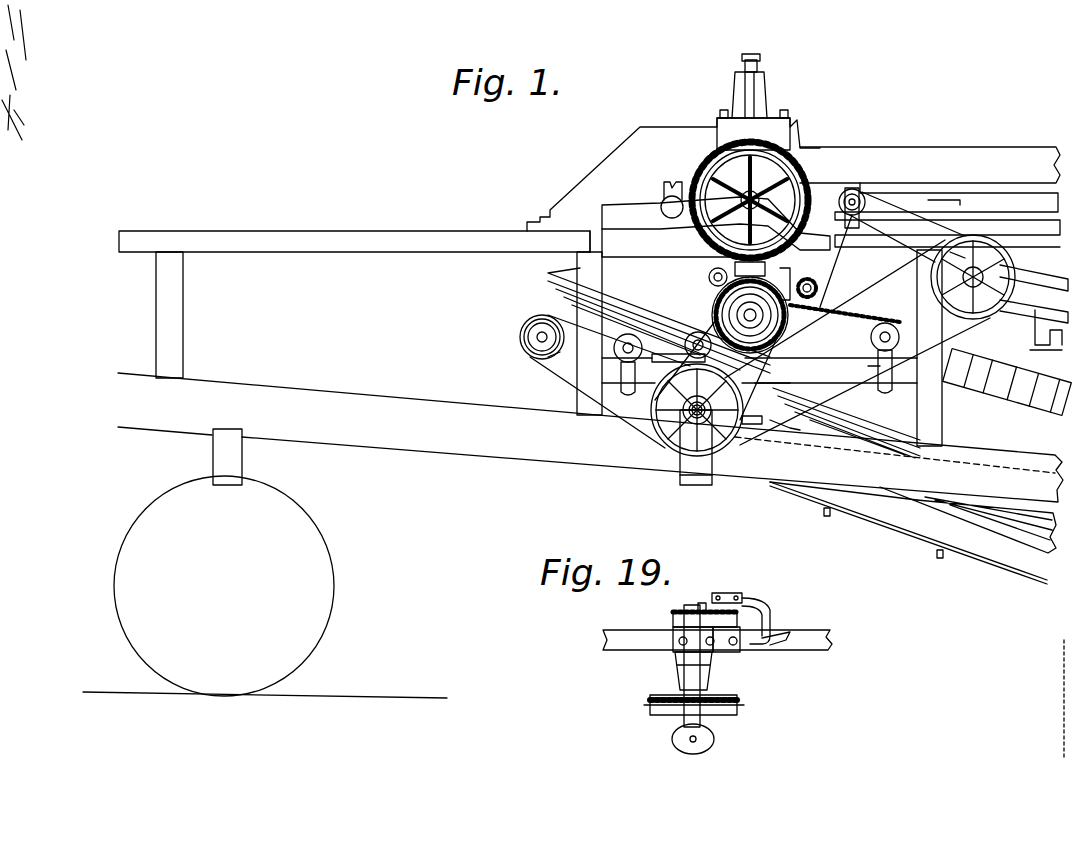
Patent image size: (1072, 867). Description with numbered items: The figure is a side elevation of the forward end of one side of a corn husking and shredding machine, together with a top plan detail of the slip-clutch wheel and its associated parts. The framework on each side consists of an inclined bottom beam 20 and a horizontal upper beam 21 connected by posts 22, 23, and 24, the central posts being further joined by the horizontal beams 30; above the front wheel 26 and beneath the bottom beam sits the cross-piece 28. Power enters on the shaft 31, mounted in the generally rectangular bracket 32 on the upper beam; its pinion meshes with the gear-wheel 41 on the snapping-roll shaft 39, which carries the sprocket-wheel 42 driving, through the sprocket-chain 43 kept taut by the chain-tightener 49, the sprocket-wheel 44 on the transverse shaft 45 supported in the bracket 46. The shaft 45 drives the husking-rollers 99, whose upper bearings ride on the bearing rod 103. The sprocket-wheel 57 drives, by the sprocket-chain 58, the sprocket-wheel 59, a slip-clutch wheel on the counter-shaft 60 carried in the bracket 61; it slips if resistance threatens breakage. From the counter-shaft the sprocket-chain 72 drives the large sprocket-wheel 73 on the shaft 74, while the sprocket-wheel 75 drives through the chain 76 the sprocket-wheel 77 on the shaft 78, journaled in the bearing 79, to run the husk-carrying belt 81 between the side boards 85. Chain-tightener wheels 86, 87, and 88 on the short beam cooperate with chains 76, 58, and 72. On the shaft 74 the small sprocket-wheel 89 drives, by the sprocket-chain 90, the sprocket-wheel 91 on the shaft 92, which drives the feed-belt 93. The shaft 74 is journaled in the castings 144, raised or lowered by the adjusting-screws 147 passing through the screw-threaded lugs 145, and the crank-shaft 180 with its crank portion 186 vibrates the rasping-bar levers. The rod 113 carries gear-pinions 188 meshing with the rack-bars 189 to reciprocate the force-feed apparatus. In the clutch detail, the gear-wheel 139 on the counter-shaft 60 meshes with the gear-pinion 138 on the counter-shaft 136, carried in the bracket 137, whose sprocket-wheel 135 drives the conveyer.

In FIG. 1, the inclined bottom beam 20 is at (590, 437).
In FIG. 19, the inclined bottom beam 20 is at (620, 644).
In FIG. 1, the horizontal upper beam 21 is at (354, 243).
In FIG. 1, the post 22 is at (170, 321).
In FIG. 1, the central post 23 is at (597, 283).
In FIG. 1, the central post 24 is at (933, 422).
In FIG. 1, the front wheel 26 is at (320, 538).
In FIG. 1, the cross-piece 28 is at (230, 460).
In FIG. 1, the horizontal beam 30 is at (759, 372).
In FIG. 1, the shaft 31 is at (672, 207).
In FIG. 1, the bracket 32 is at (710, 219).
In FIG. 1, the shaft 39 is at (762, 207).
In FIG. 1, the gear-wheel 41 is at (730, 142).
In FIG. 1, the sprocket-wheel 42 is at (775, 188).
In FIG. 1, the sprocket-chain 43 is at (751, 266).
In FIG. 1, the sprocket-wheel 44 is at (738, 310).
In FIG. 1, the transverse shaft 45 is at (722, 315).
In FIG. 1, the bracket 46 is at (840, 292).
In FIG. 1, the chain-tightener 49 is at (710, 280).
In FIG. 1, the sprocket-wheel 57 is at (680, 340).
In FIG. 1, the sprocket-chain 58 is at (755, 366).
In FIG. 1, the sprocket-wheel 59 is at (655, 438).
In FIG. 19, the sprocket-wheel 59 is at (740, 710).
In FIG. 1, the counter-shaft 60 is at (700, 418).
In FIG. 19, the counter-shaft 60 is at (696, 754).
In FIG. 1, the bracket 61 is at (690, 466).
In FIG. 19, the bracket 61 is at (675, 660).
In FIG. 1, the sprocket-chain 72 is at (857, 342).
In FIG. 1, the sprocket-wheel 73 is at (1010, 255).
In FIG. 1, the shaft 74 is at (1028, 272).
In FIG. 1, the sprocket-wheel 75 is at (760, 396).
In FIG. 1, the chain 76 is at (590, 385).
In FIG. 1, the sprocket-wheel 77 is at (520, 334).
In FIG. 1, the shaft 78 is at (530, 350).
In FIG. 1, the bearing 79 is at (545, 366).
In FIG. 1, the husk-carrying belt 81 is at (885, 525).
In FIG. 1, the side board 85 is at (998, 518).
In FIG. 1, the chain-tightener wheel 86 is at (630, 334).
In FIG. 1, the chain-tightener wheel 87 is at (690, 334).
In FIG. 1, the chain-tightener wheel 88 is at (890, 323).
In FIG. 1, the sprocket-wheel 89 is at (965, 258).
In FIG. 1, the sprocket-chain 90 is at (890, 256).
In FIG. 1, the sprocket-wheel 91 is at (858, 185).
In FIG. 1, the shaft 92 is at (840, 195).
In FIG. 1, the feed-belt 93 is at (1000, 180).
In FIG. 1, the husking-roller 99 is at (1042, 405).
In FIG. 1, the bearing rod 103 is at (790, 377).
In FIG. 1, the rod 113 is at (805, 278).
In FIG. 1, the sprocket-wheel 135 is at (762, 412).
In FIG. 19, the sprocket-wheel 135 is at (770, 612).
In FIG. 19, the counter-shaft 136 is at (728, 593).
In FIG. 1, the bracket 137 is at (790, 430).
In FIG. 19, the bracket 137 is at (785, 634).
In FIG. 19, the gear-pinion 138 is at (702, 603).
In FIG. 19, the gear-wheel 139 is at (673, 618).
In FIG. 1, the casting 144 is at (1034, 305).
In FIG. 1, the screw-threaded lug 145 is at (913, 214).
In FIG. 1, the adjusting-screw 147 is at (931, 201).
In FIG. 1, the crank-shaft 180 is at (1052, 327).
In FIG. 1, the crank portion 186 is at (1033, 345).
In FIG. 1, the gear-pinion 188 is at (812, 280).
In FIG. 1, the rack-bar 189 is at (864, 365).